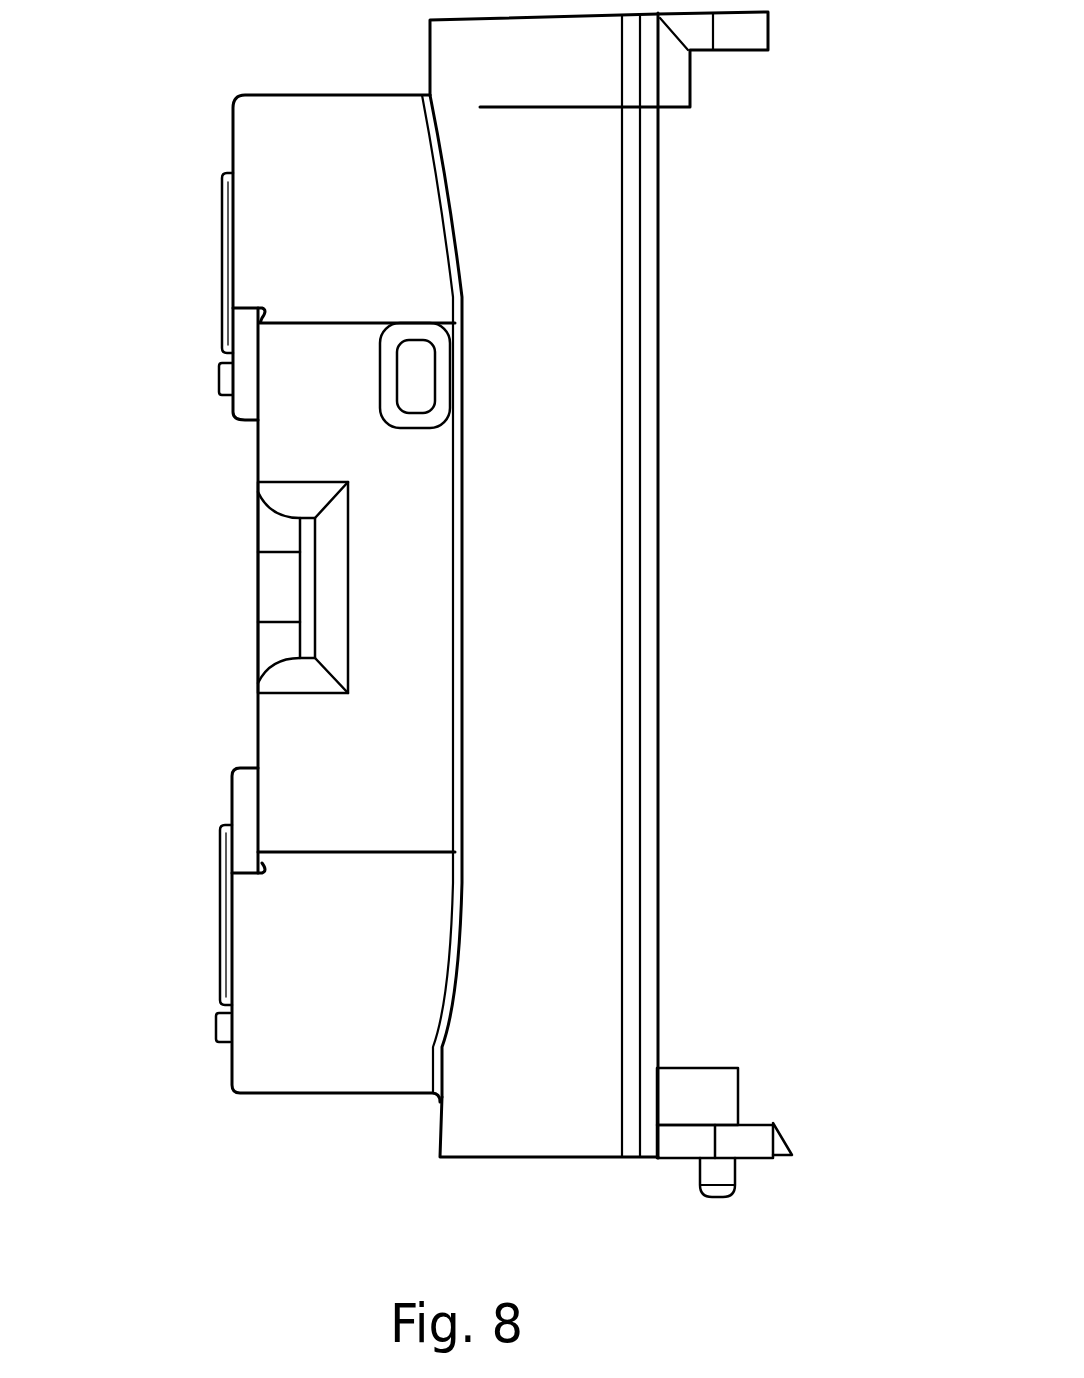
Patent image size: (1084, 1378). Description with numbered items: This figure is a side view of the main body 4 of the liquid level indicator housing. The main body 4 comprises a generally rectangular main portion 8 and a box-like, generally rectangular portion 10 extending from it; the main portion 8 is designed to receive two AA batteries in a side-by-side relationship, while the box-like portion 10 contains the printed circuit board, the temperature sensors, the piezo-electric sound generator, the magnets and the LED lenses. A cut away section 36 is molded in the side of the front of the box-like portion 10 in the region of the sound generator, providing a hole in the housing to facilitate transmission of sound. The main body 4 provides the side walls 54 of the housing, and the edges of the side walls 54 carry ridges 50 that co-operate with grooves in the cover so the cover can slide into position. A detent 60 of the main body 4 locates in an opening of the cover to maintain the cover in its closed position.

The main body 4 is at (263, 232).
The main portion 8 is at (600, 258).
The box-like portion 10 is at (306, 107).
The cut away section 36 is at (308, 582).
The ridge 50 is at (642, 1143).
The side wall 54 is at (605, 878).
The detent 60 is at (763, 1140).